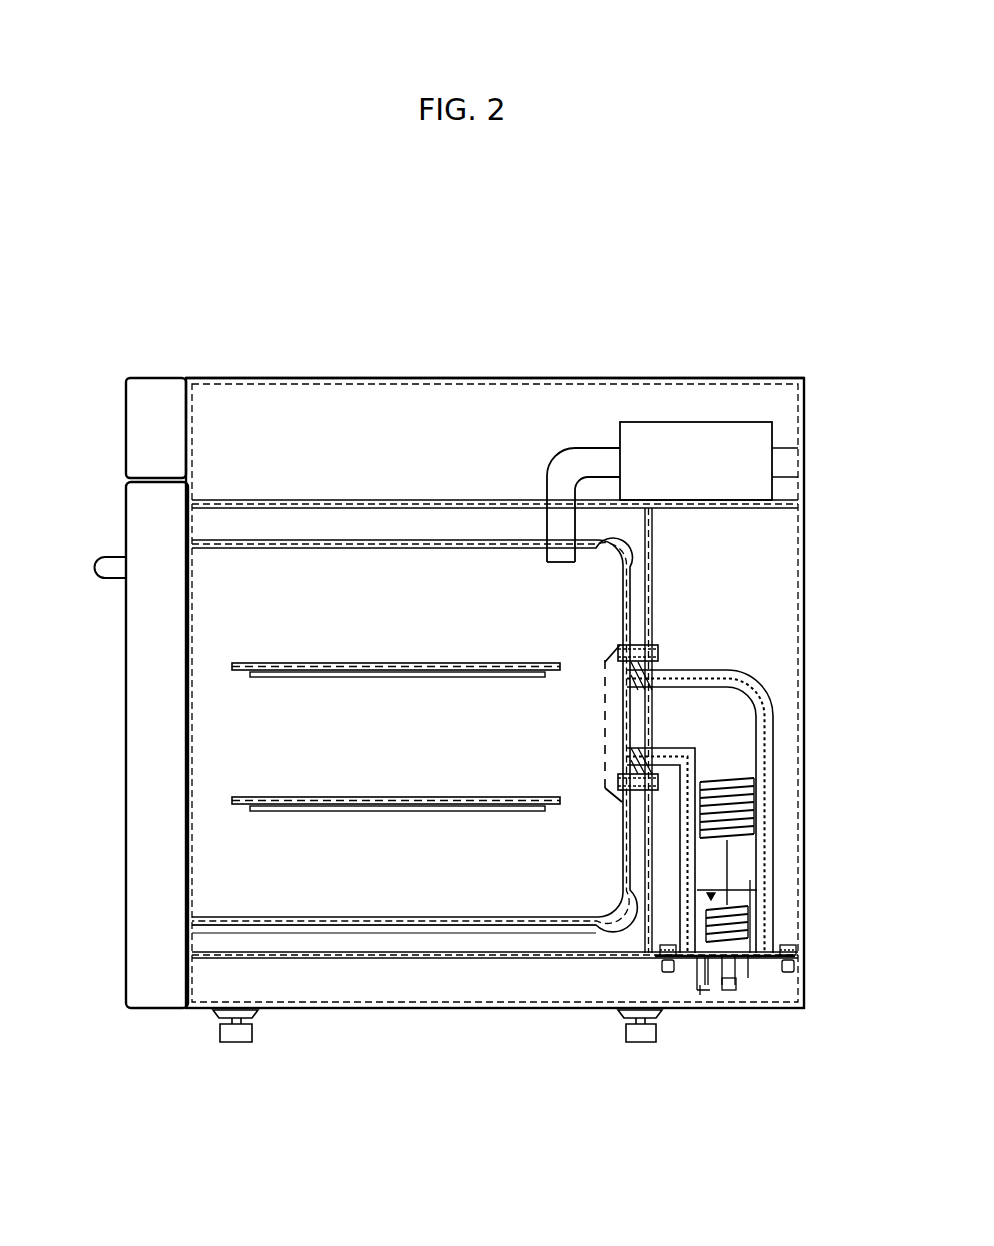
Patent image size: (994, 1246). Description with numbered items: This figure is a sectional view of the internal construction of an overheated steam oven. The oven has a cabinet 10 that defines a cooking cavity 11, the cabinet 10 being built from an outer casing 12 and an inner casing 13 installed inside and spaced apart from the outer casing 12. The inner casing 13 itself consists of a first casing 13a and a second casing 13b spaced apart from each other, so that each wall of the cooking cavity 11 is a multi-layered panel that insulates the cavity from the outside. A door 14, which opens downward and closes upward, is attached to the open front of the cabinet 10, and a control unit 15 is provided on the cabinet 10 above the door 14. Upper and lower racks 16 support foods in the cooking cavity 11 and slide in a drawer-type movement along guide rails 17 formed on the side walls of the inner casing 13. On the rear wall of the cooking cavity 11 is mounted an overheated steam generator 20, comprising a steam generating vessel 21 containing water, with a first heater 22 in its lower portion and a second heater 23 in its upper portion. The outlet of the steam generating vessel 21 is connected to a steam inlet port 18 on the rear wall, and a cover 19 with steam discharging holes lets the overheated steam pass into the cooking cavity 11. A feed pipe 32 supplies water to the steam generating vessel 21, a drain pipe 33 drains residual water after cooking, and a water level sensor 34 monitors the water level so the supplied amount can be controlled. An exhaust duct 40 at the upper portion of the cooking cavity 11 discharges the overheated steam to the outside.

The cabinet 10 is at (662, 350).
The cooking cavity 11 is at (431, 746).
The outer casing 12 is at (494, 378).
The inner casing 13 is at (495, 624).
The first casing 13a is at (388, 548).
The second casing 13b is at (373, 500).
The door 14 is at (140, 721).
The control unit 15 is at (162, 380).
The racks 16 is at (278, 662).
The guide rails 17 is at (290, 678).
The steam inlet port 18 is at (620, 755).
The cover 19 is at (613, 647).
The overheated steam generator 20 is at (781, 688).
The steam generating vessel 21 is at (777, 758).
The first heater 22 is at (775, 925).
The second heater 23 is at (770, 792).
The feed pipe 32 is at (733, 990).
The drain pipe 33 is at (700, 992).
The water level sensor 34 is at (775, 928).
The exhaust duct 40 is at (594, 446).